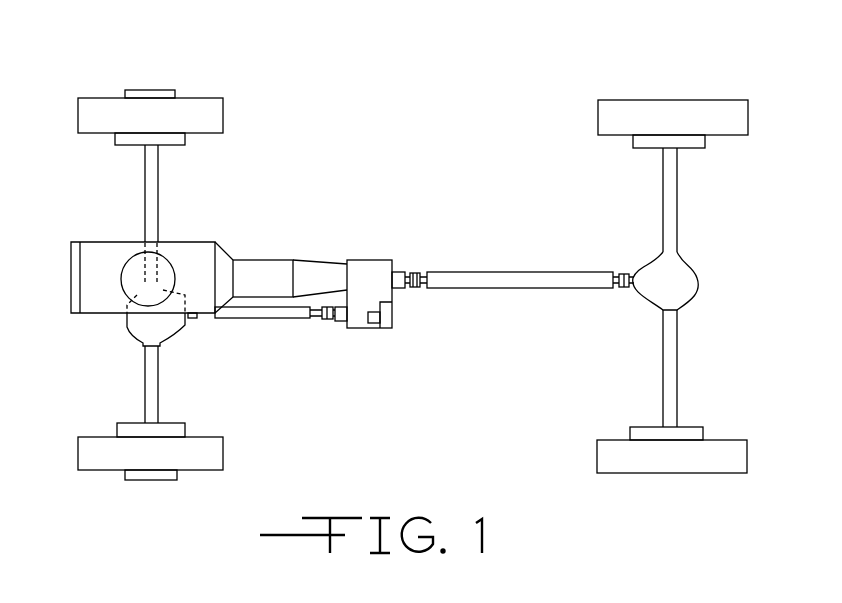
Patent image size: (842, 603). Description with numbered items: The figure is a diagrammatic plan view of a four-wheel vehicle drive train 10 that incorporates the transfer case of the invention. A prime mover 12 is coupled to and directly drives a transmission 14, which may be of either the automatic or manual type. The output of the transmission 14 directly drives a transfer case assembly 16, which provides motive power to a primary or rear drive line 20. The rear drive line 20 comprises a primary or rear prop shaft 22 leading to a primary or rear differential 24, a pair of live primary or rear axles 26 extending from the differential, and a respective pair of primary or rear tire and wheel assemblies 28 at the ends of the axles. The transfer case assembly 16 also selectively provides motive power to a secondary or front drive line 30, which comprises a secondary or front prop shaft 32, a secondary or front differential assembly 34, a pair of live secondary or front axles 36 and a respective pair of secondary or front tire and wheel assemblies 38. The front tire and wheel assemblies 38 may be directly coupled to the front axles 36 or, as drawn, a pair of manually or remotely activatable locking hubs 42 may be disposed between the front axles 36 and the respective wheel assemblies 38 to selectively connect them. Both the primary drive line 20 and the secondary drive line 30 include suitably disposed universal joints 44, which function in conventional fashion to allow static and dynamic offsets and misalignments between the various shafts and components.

The four-wheel vehicle drive train 10 is at (425, 90).
The prime mover 12 is at (93, 260).
The transmission 14 is at (265, 270).
The transfer case assembly 16 is at (374, 254).
The primary or rear drive line 20 is at (535, 227).
The primary or rear prop shaft 22 is at (527, 282).
The primary or rear differential 24 is at (677, 285).
The primary or rear axles 26 is at (677, 192).
The primary or rear tire and wheel assemblies 28 is at (687, 90).
The secondary or front drive line 30 is at (341, 373).
The secondary or front prop shaft 32 is at (257, 316).
The secondary or front differential assembly 34 is at (145, 323).
The secondary or front axles 36 is at (160, 172).
The secondary or front tire and wheel assemblies 38 is at (193, 90).
The locking hubs 42 is at (137, 90).
The universal joints 44 is at (620, 272).